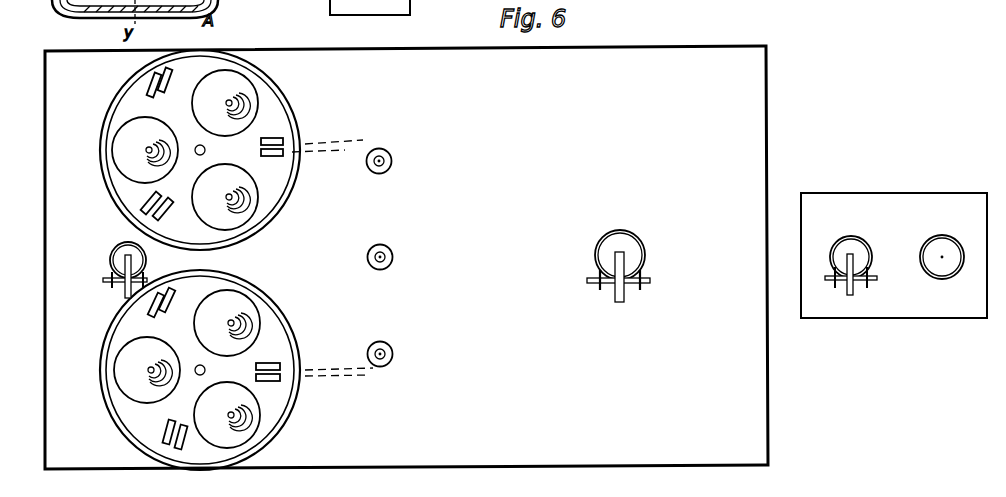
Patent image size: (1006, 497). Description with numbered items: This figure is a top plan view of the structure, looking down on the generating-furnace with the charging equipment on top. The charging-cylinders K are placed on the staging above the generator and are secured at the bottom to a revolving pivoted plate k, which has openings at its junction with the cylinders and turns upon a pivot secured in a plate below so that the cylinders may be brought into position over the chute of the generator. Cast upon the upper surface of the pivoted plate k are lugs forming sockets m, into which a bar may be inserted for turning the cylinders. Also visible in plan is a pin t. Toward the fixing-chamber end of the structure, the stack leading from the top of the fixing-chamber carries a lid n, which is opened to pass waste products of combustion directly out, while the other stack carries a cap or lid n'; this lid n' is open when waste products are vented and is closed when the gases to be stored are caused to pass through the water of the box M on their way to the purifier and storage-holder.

The charging-cylinder K is at (187, 260).
The revolving pivoted plate k is at (186, 259).
The sockets m is at (212, 256).
The pin with collar t is at (117, 267).
The lid of stack N n is at (612, 266).
The cap or lid of stack L' n' is at (848, 262).
The box M is at (894, 255).